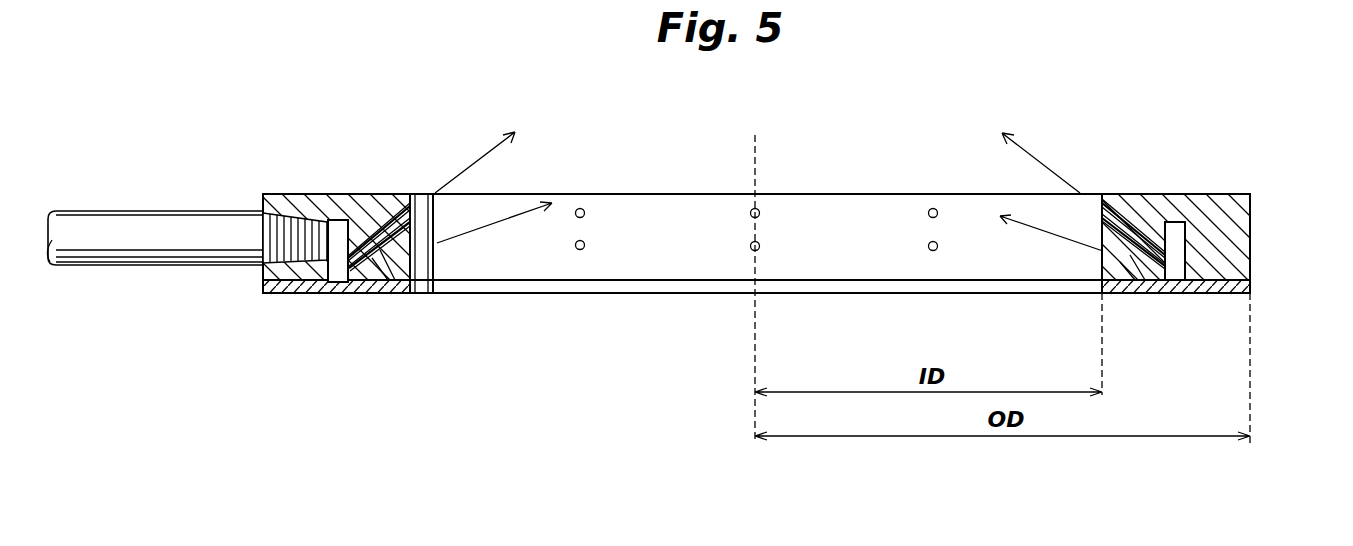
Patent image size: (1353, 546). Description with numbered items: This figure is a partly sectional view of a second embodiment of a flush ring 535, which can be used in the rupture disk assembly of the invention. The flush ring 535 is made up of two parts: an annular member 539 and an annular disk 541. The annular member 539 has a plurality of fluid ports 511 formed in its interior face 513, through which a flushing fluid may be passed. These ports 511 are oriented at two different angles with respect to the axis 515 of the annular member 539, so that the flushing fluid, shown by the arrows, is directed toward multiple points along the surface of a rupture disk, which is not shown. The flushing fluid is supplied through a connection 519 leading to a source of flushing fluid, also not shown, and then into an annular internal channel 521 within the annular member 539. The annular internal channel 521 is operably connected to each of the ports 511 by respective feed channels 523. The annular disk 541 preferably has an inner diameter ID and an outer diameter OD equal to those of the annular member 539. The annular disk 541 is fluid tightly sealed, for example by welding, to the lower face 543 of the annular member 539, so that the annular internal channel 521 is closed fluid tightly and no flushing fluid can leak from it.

The fluid ports 511 is at (585, 213).
The interior face 513 is at (445, 293).
The axis 515 is at (755, 150).
The connection 519 is at (110, 266).
The annular internal channel 521 is at (1187, 240).
The feed channels 523 is at (388, 193).
The flush ring 535 is at (887, 152).
The annular member 539 is at (1217, 194).
The annular disk 541 is at (263, 292).
The lower face 543 is at (1225, 293).